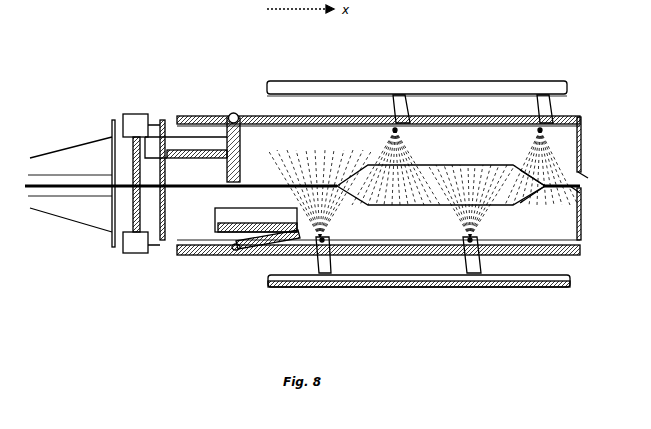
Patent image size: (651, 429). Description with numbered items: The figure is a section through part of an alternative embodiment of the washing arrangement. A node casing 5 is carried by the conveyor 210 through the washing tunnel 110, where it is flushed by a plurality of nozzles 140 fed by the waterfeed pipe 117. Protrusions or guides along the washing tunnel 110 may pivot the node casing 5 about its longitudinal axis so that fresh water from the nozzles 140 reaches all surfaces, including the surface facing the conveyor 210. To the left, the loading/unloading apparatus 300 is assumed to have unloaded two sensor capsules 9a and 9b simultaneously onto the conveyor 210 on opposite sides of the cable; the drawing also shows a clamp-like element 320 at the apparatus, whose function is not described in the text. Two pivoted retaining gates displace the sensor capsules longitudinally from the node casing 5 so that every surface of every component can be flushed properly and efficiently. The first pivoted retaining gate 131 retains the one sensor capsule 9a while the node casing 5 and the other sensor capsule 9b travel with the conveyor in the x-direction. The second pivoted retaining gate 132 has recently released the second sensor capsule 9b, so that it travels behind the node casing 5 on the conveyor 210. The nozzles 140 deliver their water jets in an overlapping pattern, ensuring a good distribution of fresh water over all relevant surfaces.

The loading/unloading apparatus 300 is at (96, 106).
The clamping element 320 is at (136, 113).
The sensor capsule 9a is at (163, 140).
The washing tunnel 110 is at (215, 115).
The waterfeed pipe 117 is at (465, 82).
The first pivoted retaining gate 131 is at (241, 138).
The node casing 5 is at (423, 165).
The sensor capsule 9b is at (225, 208).
The second pivoted retaining gate 132 is at (250, 255).
The conveyor 210 is at (173, 233).
The nozzle 140 is at (330, 263).